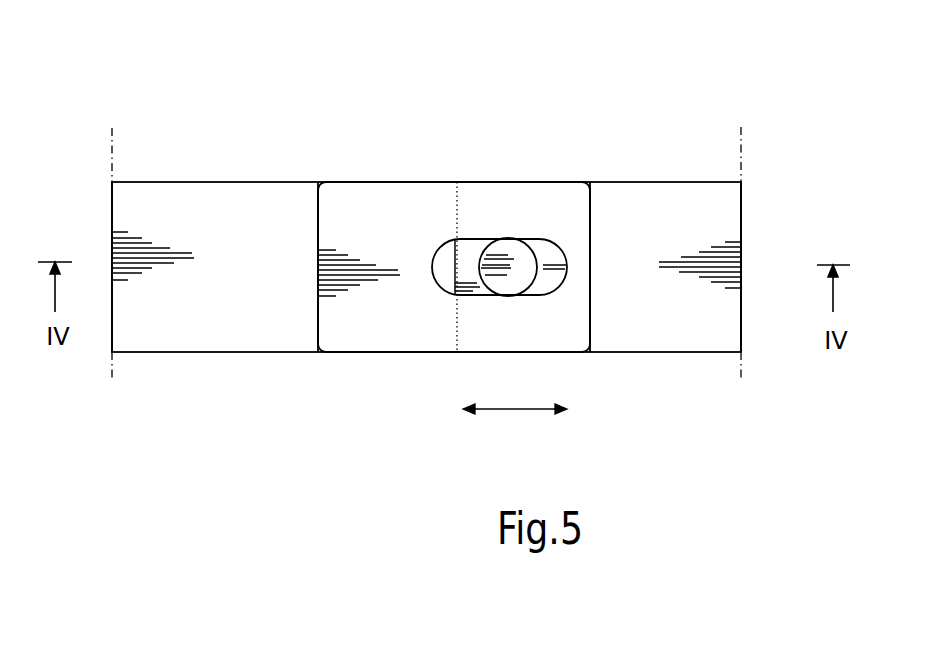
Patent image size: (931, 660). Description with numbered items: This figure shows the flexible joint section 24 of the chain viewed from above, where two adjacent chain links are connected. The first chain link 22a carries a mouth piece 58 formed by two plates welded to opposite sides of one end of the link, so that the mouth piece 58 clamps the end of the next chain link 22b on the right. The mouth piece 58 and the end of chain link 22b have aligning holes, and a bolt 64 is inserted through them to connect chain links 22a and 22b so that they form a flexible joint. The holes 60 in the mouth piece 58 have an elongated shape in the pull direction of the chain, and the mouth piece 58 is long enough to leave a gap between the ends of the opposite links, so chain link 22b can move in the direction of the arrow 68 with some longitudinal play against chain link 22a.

The joint section 24 is at (363, 138).
The first chain link 22a is at (215, 330).
The chain link 22b is at (693, 352).
The mouth piece 58 is at (393, 332).
The holes 60 is at (443, 257).
The bolt 64 is at (525, 262).
The arrow 68 is at (513, 410).